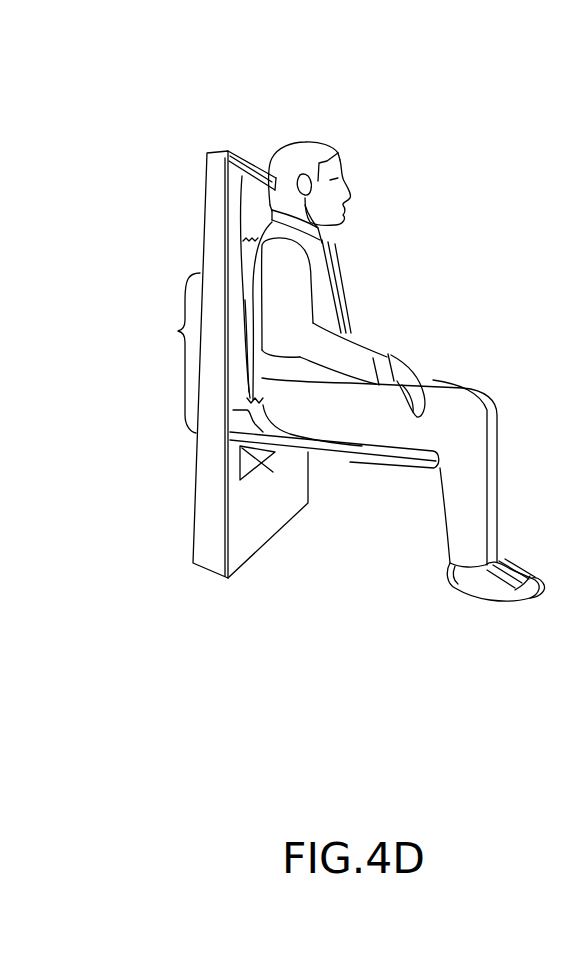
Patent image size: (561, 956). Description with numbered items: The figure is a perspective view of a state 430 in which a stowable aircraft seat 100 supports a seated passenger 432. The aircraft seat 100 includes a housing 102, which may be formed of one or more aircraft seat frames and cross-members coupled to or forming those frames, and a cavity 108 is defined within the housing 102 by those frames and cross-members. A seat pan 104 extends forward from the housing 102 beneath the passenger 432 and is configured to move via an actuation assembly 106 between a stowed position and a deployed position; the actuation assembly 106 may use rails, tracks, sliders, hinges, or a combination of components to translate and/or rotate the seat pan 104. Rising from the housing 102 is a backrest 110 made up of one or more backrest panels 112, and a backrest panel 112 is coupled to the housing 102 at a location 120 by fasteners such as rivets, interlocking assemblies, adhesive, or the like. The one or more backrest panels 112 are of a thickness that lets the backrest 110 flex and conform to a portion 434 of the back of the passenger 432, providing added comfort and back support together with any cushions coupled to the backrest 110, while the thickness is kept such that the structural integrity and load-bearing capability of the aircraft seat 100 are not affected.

The state 430 is at (149, 67).
The aircraft seat 100 is at (188, 589).
The housing 102 is at (217, 183).
The seat pan 104 is at (417, 468).
The actuation assembly 106 is at (236, 452).
The cavity 108 is at (244, 373).
The backrest 110 is at (261, 195).
The backrest panel 112 is at (253, 217).
The location 120 is at (248, 241).
The passenger 432 is at (341, 262).
The portion of a back of the passenger 434 is at (168, 353).